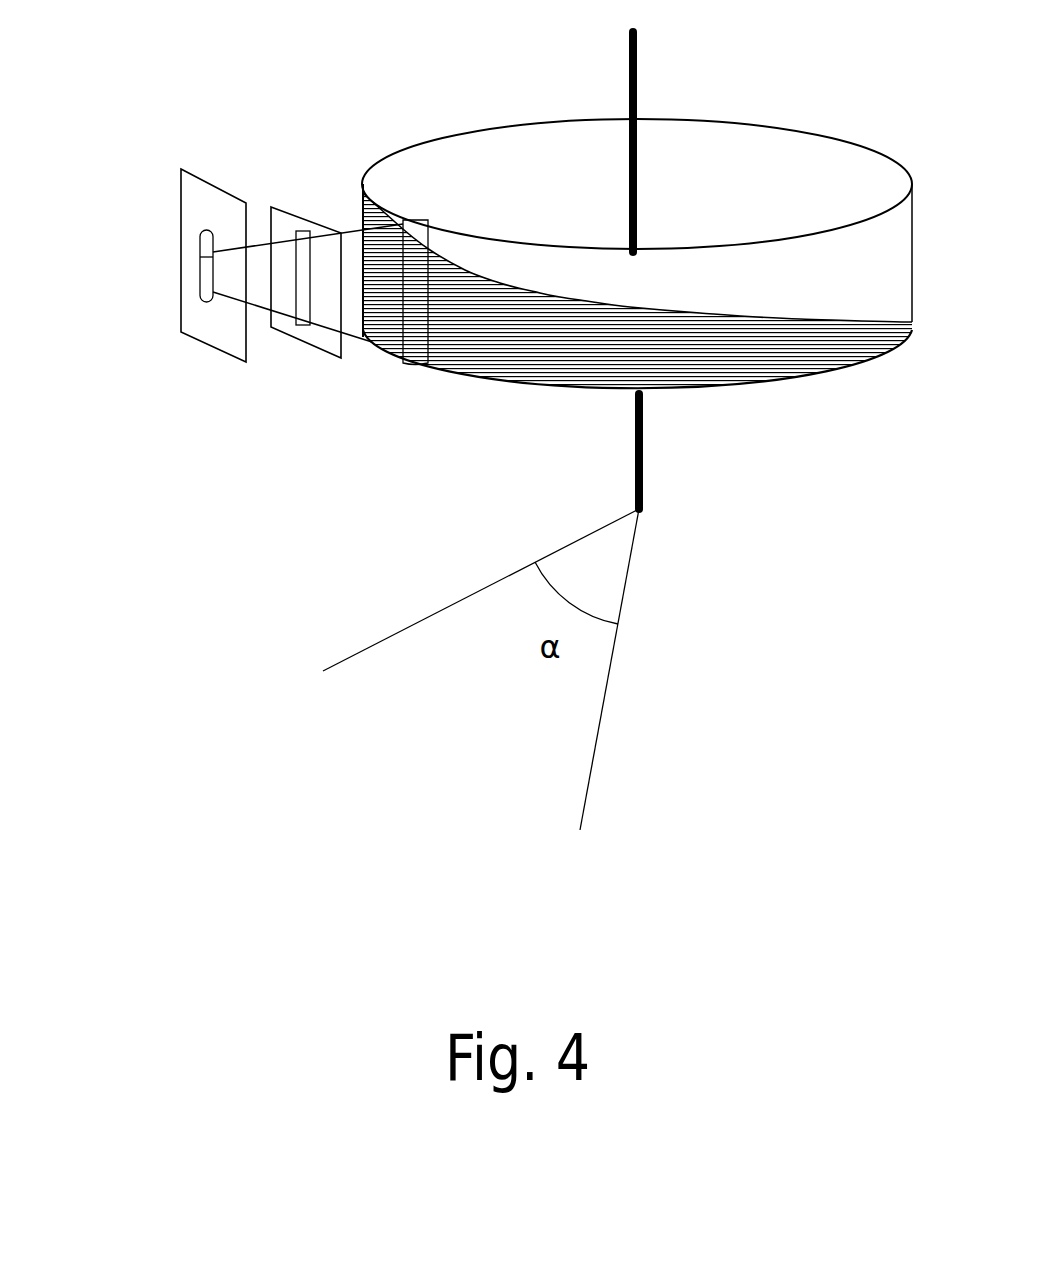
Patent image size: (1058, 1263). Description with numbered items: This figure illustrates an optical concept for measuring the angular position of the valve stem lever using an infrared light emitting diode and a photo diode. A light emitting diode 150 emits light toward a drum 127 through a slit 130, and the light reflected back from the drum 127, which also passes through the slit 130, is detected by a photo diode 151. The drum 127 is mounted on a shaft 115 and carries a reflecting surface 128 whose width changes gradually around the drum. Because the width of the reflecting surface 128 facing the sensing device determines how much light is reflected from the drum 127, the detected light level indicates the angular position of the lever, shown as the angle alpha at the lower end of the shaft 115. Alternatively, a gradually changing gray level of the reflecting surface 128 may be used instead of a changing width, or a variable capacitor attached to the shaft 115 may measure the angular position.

The shaft 115 is at (639, 90).
The drum 127 is at (470, 162).
The reflecting surface 128 is at (490, 348).
The slit 130 is at (303, 257).
The light emitting diode 150 is at (139, 241).
The photo diode 151 is at (208, 240).